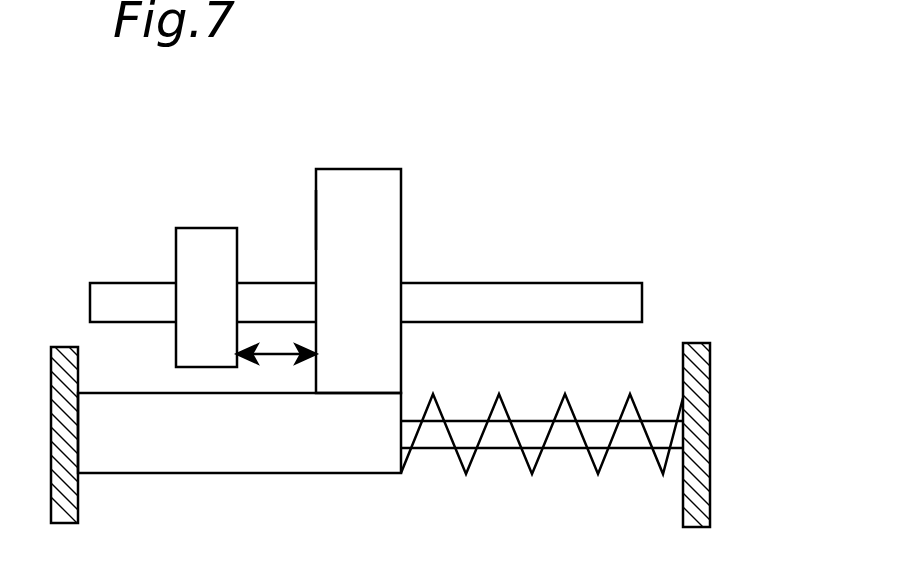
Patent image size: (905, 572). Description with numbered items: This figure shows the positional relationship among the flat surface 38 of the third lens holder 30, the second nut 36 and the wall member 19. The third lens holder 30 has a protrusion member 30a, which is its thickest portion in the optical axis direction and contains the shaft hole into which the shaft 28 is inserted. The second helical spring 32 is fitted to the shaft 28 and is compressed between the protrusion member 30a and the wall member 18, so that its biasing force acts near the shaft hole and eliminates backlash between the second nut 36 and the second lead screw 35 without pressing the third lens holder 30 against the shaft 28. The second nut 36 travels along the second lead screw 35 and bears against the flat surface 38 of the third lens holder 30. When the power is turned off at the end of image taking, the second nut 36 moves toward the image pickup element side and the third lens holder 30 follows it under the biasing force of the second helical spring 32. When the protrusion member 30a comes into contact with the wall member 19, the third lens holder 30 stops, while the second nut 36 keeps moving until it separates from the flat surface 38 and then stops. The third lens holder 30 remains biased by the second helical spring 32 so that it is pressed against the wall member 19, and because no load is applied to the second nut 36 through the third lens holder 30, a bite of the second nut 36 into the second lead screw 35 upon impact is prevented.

The wall member 18 is at (710, 517).
The wall member 19 is at (78, 514).
The shaft 28 is at (528, 421).
The third lens holder 30 is at (360, 169).
The protrusion member 30a is at (293, 473).
The second helical spring 32 is at (464, 476).
The second lead screw 35 is at (515, 283).
The second nut 36 is at (200, 228).
The flat surface 38 is at (316, 217).